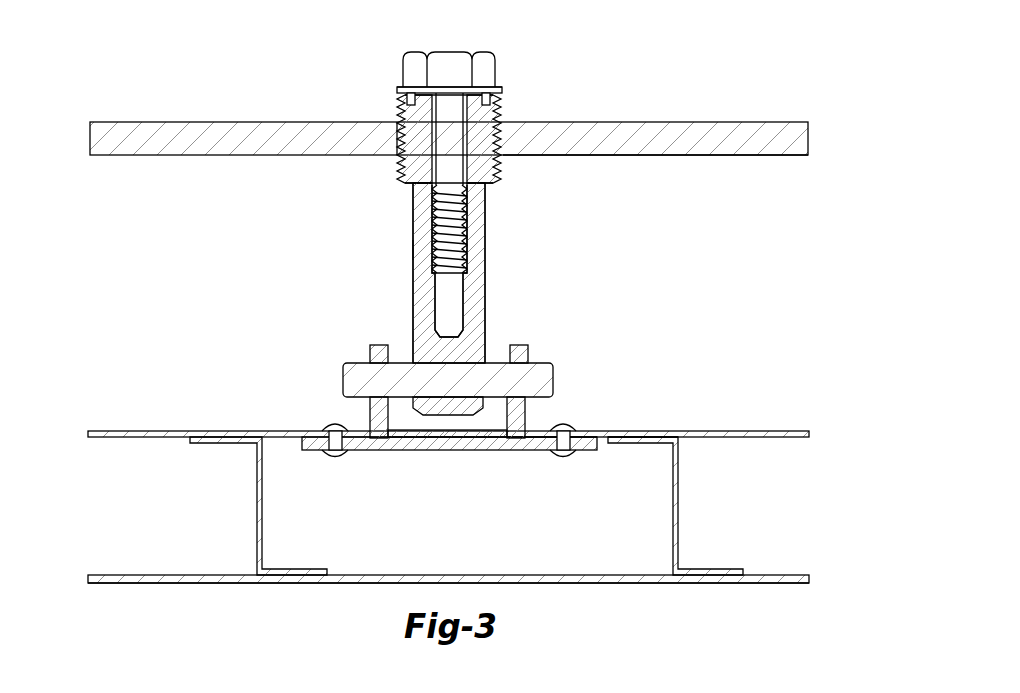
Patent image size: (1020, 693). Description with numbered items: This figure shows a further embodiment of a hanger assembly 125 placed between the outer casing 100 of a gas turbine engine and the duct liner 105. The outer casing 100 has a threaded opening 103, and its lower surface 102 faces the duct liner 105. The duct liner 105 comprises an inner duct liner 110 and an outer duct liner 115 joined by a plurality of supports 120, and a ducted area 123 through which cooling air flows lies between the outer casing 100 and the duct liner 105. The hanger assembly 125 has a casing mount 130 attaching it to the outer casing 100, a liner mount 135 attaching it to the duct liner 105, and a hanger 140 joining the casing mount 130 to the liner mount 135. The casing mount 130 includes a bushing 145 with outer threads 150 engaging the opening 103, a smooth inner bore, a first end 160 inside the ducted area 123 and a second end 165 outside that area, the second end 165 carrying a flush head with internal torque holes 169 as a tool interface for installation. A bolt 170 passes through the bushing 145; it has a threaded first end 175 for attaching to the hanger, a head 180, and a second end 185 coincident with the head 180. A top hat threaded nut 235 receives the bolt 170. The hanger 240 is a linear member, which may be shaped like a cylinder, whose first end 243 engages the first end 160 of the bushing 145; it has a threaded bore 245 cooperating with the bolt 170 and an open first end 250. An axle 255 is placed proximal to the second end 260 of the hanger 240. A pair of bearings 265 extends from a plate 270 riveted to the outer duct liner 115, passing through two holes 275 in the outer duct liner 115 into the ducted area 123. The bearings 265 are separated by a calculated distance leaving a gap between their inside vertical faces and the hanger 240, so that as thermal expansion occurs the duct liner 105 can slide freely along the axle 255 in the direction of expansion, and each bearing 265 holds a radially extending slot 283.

The outer casing 100 is at (122, 122).
The lower surface of upper panel 102 is at (503, 132).
The opening 103 is at (393, 137).
The duct liner 105 is at (182, 607).
The inner duct liner 110 is at (136, 575).
The outer duct liner 115 is at (131, 431).
The supports 120 is at (258, 503).
The ducted area 123 is at (200, 219).
The hanger assembly 125 is at (355, 290).
The casing mount 130 is at (510, 169).
The liner mount 135 is at (665, 388).
The hanger 140 is at (333, 242).
The bushing 145 is at (395, 158).
The outer threads 150 is at (395, 175).
The first end 160 is at (409, 190).
The second end 165 is at (403, 98).
The internal torque holes 169 is at (490, 100).
The bolt 170 is at (447, 120).
The threaded first end 175 is at (455, 228).
The head 180 is at (487, 72).
The second end 185 is at (428, 50).
The top hat threaded nut 235 is at (406, 445).
The hanger 240 is at (485, 290).
The first end 243 is at (410, 195).
The threaded bore 245 is at (455, 258).
The first end 250 is at (470, 190).
The axle 255 is at (345, 372).
The second end 260 is at (452, 445).
The bearings 265 is at (370, 400).
The plate 270 is at (487, 445).
The holes 275 is at (360, 425).
The radially extending slot 283 is at (371, 362).